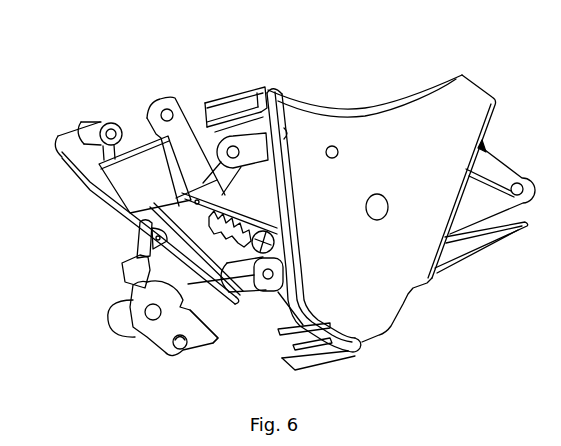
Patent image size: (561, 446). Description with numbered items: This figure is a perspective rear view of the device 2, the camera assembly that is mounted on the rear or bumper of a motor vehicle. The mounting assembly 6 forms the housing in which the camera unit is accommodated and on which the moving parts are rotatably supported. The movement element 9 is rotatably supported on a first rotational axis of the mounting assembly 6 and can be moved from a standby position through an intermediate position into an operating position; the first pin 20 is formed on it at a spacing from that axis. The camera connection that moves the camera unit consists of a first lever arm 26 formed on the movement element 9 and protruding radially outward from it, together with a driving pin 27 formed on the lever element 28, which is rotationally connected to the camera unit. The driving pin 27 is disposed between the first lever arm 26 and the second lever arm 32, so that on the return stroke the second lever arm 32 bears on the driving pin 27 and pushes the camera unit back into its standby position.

The device 2 is at (195, 84).
The mounting assembly 6 is at (408, 98).
The movement element 9 is at (150, 342).
The first pin 20 is at (182, 345).
The first lever arm 26 is at (134, 228).
The driving pin 27 is at (157, 236).
The lever element 28 is at (93, 173).
The second lever arm 32 is at (217, 338).